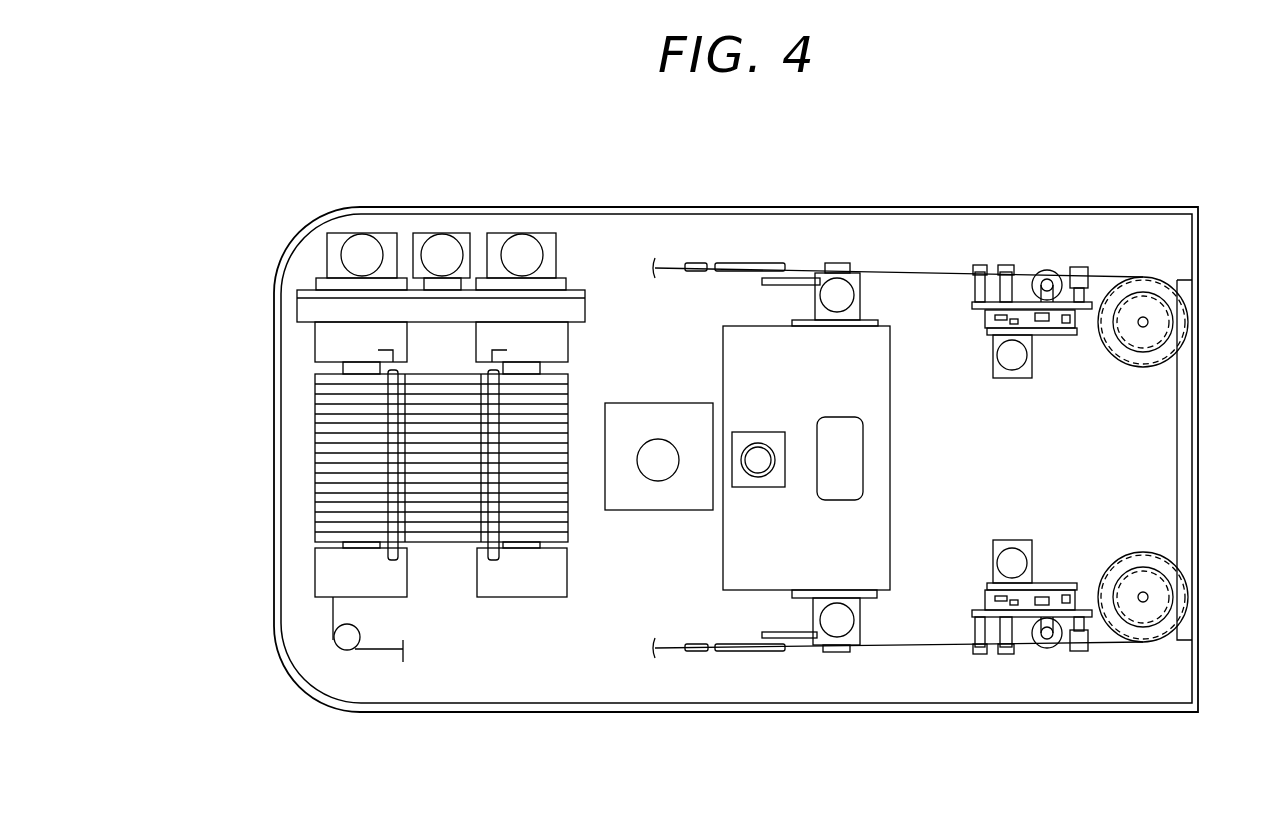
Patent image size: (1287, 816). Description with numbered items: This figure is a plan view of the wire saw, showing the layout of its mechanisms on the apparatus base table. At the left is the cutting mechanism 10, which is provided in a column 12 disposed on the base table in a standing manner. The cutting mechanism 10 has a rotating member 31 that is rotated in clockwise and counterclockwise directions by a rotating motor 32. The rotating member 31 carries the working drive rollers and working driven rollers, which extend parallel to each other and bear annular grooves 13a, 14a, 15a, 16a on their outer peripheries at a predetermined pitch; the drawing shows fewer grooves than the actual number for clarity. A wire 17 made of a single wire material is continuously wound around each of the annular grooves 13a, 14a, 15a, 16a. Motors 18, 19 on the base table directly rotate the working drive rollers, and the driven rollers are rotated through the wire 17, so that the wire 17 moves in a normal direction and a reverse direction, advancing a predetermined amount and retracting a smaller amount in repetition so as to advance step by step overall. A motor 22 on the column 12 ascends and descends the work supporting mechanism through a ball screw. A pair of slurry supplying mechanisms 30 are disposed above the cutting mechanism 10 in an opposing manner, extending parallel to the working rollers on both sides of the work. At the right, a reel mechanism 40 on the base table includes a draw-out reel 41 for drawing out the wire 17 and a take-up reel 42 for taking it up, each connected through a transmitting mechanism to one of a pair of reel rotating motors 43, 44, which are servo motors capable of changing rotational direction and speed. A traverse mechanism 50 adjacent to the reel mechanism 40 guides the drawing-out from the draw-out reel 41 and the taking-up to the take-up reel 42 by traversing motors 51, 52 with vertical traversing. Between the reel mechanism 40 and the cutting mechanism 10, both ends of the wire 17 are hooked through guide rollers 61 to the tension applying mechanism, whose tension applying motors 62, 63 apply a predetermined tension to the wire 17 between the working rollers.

The cutting mechanism 10 is at (300, 407).
The column 12 is at (688, 510).
The annular groove 13a is at (340, 505).
The annular groove 14a is at (418, 485).
The annular groove 15a is at (418, 485).
The annular groove 16a is at (418, 485).
The wire 17 is at (442, 535).
The motor 18 is at (535, 233).
The motor 19 is at (378, 233).
The motor for ascending and descending the work 22 is at (658, 439).
The slurry supplying mechanism 30 is at (333, 353).
The rotating member 31 is at (585, 310).
The rotating motor 32 is at (455, 233).
The reel mechanism 40 is at (1189, 430).
The draw-out reel 41 is at (1189, 606).
The take-up reel 42 is at (1189, 335).
The reel rotating motor 43 is at (1188, 582).
The reel rotating motor 44 is at (1190, 305).
The traverse mechanism 50 is at (1040, 439).
The traversing motor 51 is at (1010, 540).
The traversing motor 52 is at (1015, 378).
The guide roller 61 is at (343, 642).
The tension applying motor 62 is at (837, 598).
The tension applying motor 63 is at (837, 320).